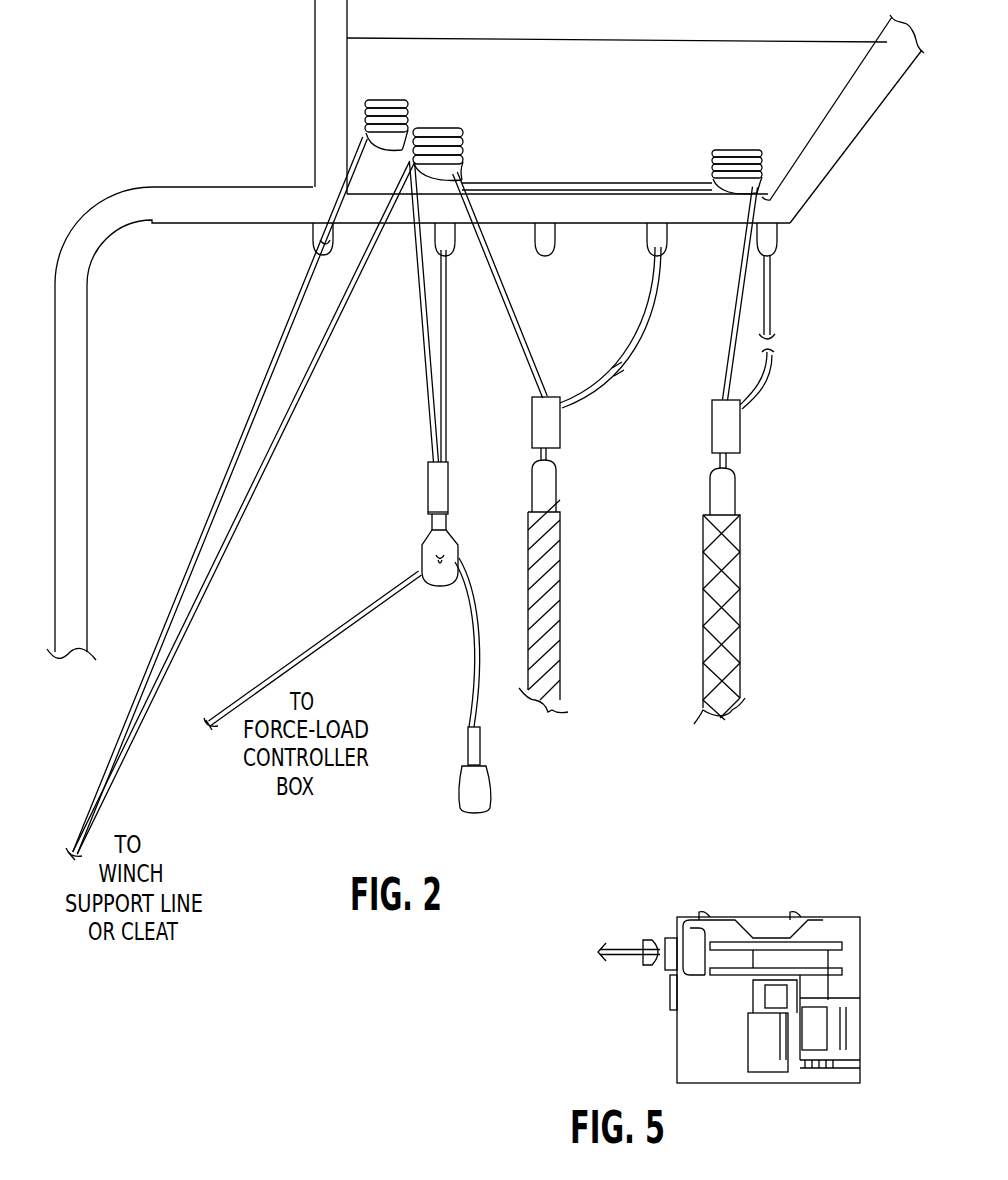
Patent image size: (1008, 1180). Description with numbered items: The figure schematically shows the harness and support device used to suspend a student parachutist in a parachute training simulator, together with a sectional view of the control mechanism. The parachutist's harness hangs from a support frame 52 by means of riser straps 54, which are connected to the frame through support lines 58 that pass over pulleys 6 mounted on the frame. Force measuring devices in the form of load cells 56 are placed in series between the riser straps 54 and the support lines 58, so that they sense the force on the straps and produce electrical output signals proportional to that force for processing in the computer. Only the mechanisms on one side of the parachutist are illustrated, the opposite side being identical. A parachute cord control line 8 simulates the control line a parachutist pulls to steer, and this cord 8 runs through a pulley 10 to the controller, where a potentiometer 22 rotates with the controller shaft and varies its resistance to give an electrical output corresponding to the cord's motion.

In FIG. 2, the pulleys 6 is at (393, 100).
In FIG. 2, the parachute cord control line 8 is at (480, 650).
In FIG. 5, the parachute cord control line 8 is at (623, 943).
In FIG. 2, the pulley 10 is at (442, 537).
In FIG. 5, the potentiometer 22 is at (767, 1057).
In FIG. 2, the support frame 52 is at (830, 145).
In FIG. 2, the riser straps 54 is at (707, 572).
In FIG. 2, the load cells 56 is at (712, 422).
In FIG. 2, the support lines 58 is at (523, 333).